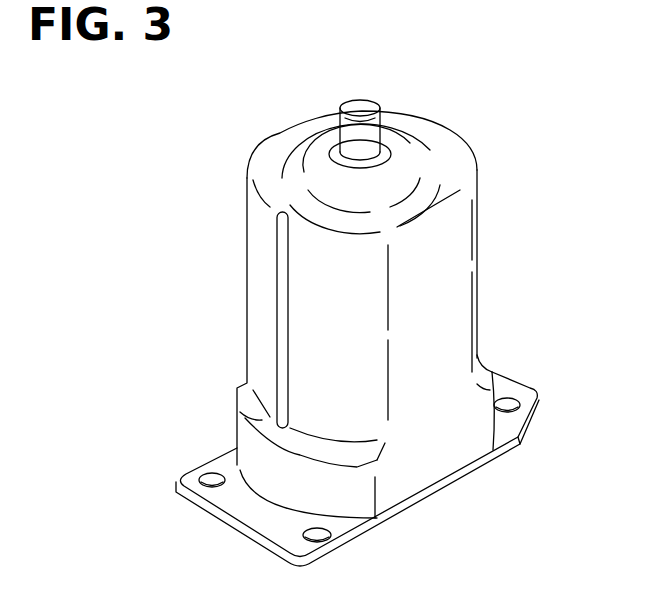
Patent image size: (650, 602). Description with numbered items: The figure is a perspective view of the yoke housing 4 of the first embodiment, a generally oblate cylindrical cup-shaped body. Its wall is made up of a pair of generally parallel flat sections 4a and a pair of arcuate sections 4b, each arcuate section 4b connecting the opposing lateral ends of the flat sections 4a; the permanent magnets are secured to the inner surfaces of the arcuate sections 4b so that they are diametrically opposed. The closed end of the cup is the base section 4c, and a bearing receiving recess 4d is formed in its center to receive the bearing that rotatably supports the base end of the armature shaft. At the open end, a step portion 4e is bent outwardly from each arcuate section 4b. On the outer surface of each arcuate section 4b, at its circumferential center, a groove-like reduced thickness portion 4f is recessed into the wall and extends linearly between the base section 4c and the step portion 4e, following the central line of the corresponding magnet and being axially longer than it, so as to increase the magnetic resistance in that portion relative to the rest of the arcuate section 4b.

The yoke housing 4 is at (272, 139).
The flat section 4a is at (440, 305).
The arcuate section 4b is at (250, 334).
The base section 4c is at (463, 140).
The bearing receiving recess 4d is at (398, 133).
The step portion 4e is at (245, 418).
The reduced thickness portion 4f is at (277, 222).